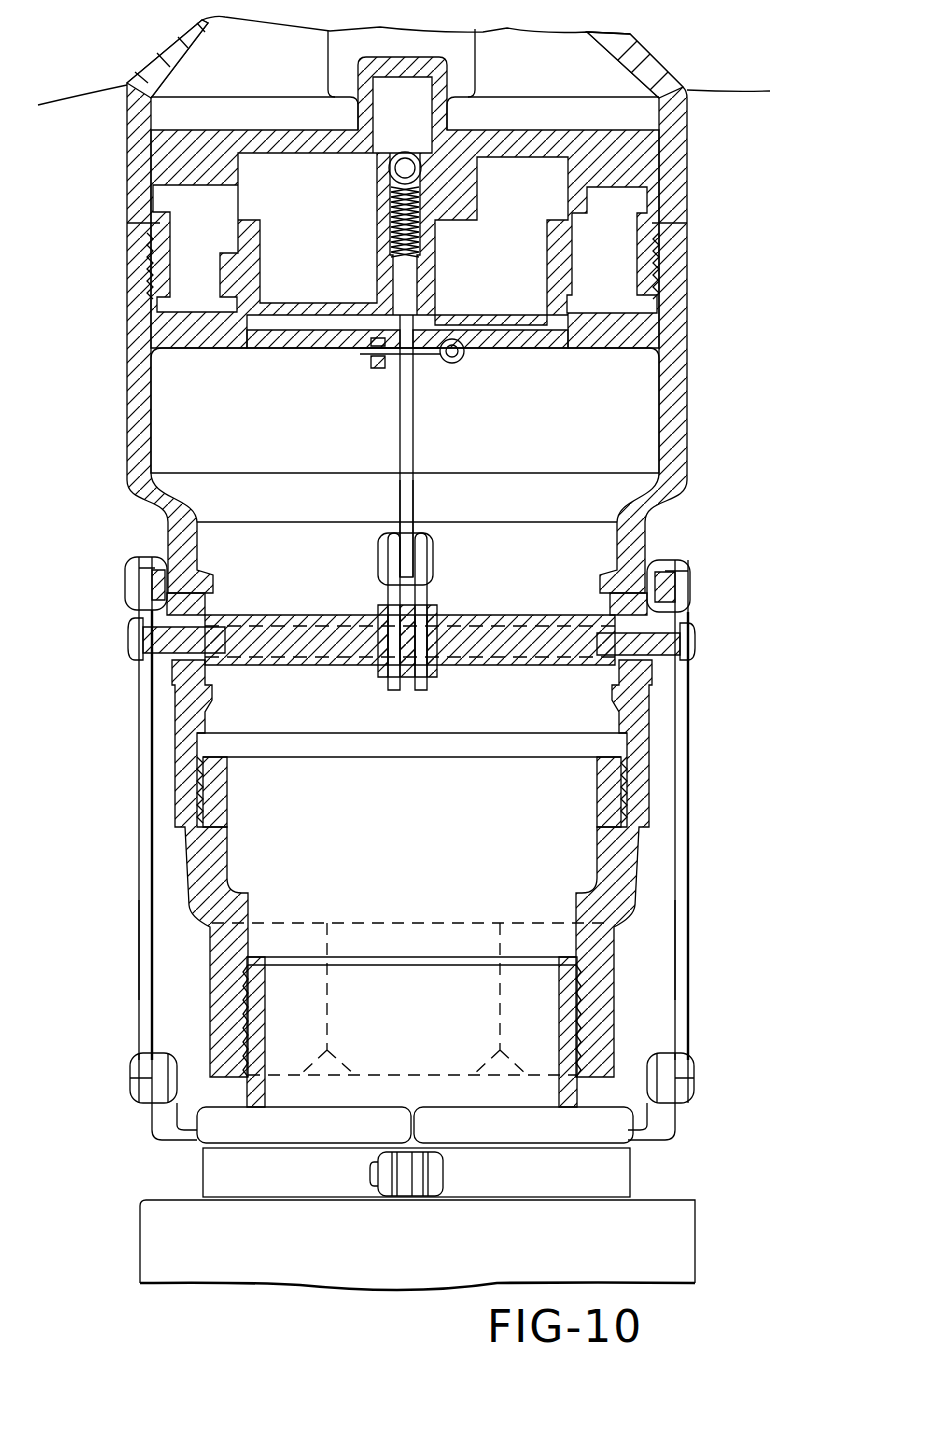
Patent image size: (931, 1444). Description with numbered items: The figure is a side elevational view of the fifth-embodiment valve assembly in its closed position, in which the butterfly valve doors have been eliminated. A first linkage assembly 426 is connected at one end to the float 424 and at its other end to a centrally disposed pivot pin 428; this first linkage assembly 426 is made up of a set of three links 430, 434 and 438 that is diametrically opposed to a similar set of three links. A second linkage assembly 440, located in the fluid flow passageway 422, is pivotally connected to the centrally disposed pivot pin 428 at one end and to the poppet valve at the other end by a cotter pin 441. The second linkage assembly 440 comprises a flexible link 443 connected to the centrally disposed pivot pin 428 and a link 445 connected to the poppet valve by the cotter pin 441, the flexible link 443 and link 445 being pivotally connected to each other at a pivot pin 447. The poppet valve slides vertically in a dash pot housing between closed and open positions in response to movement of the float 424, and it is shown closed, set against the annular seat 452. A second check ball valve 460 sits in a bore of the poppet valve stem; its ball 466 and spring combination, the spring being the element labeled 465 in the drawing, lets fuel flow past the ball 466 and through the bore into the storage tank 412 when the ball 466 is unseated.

The storage tank 412 is at (755, 43).
The ball 466 is at (403, 158).
The spring 465 is at (377, 213).
The second check ball valve 460 is at (435, 232).
The fluid flow passageway 422 is at (160, 430).
The cotter pin 441 is at (367, 358).
The annular seat 452 is at (560, 325).
The second linkage assembly 440 is at (413, 427).
The link 445 is at (417, 502).
The flexible link 443 is at (430, 602).
The pivot pin 447 is at (433, 557).
The link 438 is at (680, 608).
The centrally disposed pivot pin 428 is at (353, 670).
The first linkage assembly 426 is at (122, 858).
The link 434 is at (139, 935).
The link 430 is at (175, 1138).
The float 424 is at (700, 1200).